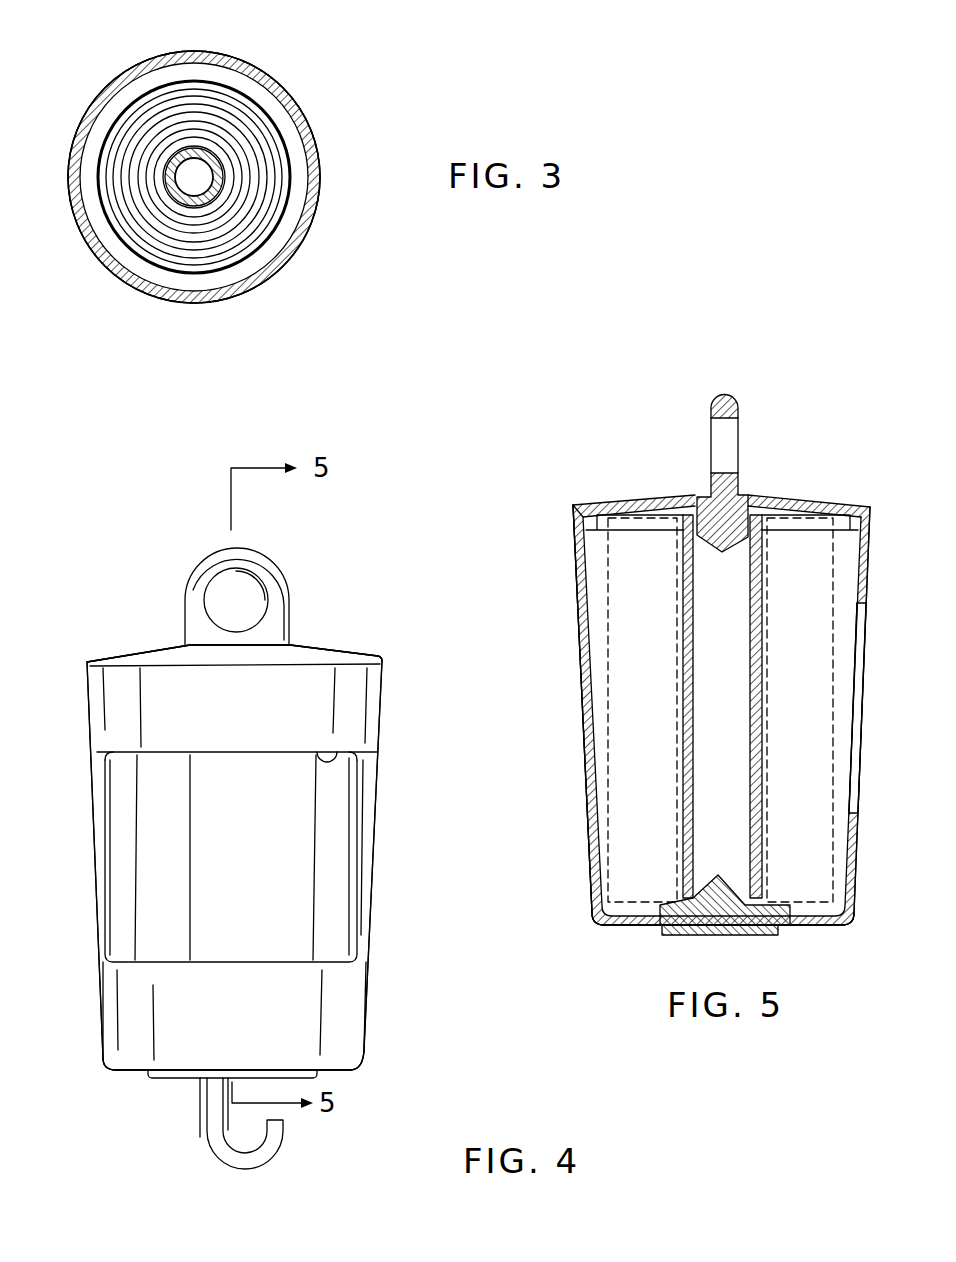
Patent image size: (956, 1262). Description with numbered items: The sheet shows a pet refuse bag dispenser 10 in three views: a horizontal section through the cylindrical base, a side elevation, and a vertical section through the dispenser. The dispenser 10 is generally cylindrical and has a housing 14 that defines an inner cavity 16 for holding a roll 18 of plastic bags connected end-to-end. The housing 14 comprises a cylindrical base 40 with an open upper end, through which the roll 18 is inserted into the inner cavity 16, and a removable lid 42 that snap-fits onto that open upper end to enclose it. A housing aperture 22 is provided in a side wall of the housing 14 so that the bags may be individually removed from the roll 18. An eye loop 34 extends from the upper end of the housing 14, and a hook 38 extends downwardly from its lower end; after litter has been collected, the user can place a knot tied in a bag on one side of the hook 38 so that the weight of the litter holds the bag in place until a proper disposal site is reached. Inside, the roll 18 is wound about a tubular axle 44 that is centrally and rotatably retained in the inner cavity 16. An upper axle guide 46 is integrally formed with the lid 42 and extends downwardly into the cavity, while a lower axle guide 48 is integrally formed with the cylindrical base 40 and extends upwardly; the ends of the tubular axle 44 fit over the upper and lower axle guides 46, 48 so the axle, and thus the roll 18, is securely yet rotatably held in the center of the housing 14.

In FIG. 3, the pet refuse bag dispenser 10 is at (82, 92).
In FIG. 4, the pet refuse bag dispenser 10 is at (316, 618).
In FIG. 5, the pet refuse bag dispenser 10 is at (845, 475).
In FIG. 3, the housing 14 is at (320, 156).
In FIG. 4, the housing 14 is at (96, 945).
In FIG. 5, the housing 14 is at (581, 860).
In FIG. 3, the inner cavity 16 is at (260, 253).
In FIG. 5, the inner cavity 16 is at (845, 590).
In FIG. 3, the roll of plastic bags 18 is at (137, 233).
In FIG. 5, the roll of plastic bags 18 is at (840, 730).
In FIG. 4, the housing aperture 22 is at (378, 748).
In FIG. 5, the housing aperture 22 is at (853, 805).
In FIG. 4, the eye loop 34 is at (185, 580).
In FIG. 5, the eye loop 34 is at (727, 395).
In FIG. 4, the hook 38 is at (250, 1175).
In FIG. 3, the cylindrical base 40 is at (197, 305).
In FIG. 4, the cylindrical base 40 is at (367, 1022).
In FIG. 5, the cylindrical base 40 is at (585, 782).
In FIG. 4, the removable lid 42 is at (148, 650).
In FIG. 5, the removable lid 42 is at (638, 493).
In FIG. 3, the tubular axle 44 is at (188, 147).
In FIG. 5, the tubular axle 44 is at (763, 877).
In FIG. 5, the upper axle guide 46 is at (737, 500).
In FIG. 5, the lower axle guide 48 is at (663, 928).